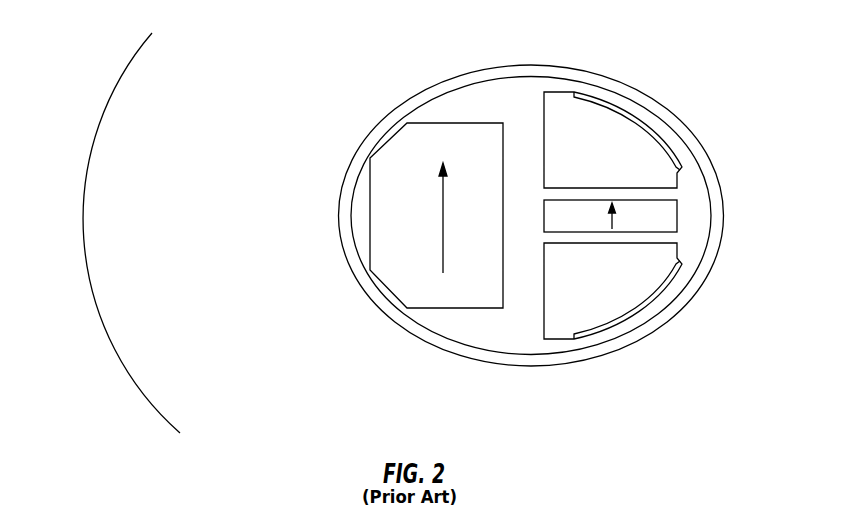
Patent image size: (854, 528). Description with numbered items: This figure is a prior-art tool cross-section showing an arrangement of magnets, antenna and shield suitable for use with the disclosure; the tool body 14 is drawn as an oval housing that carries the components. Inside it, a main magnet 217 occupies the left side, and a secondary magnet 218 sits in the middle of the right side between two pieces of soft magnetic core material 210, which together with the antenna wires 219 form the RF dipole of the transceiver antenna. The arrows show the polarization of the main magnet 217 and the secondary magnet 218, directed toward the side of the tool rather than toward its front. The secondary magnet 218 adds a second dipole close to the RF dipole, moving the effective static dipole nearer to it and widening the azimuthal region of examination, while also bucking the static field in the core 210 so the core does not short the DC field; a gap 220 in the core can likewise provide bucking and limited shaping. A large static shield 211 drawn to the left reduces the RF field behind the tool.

The housing 14 is at (428, 335).
The core material 210 is at (557, 105).
The static shield 211 is at (94, 296).
The main magnet 217 is at (397, 285).
The secondary magnet 218 is at (677, 207).
The wires 219 is at (658, 130).
The gap 220 is at (677, 191).